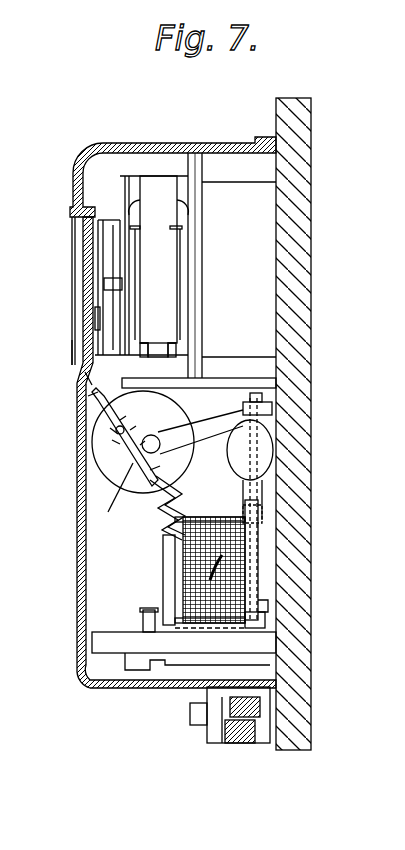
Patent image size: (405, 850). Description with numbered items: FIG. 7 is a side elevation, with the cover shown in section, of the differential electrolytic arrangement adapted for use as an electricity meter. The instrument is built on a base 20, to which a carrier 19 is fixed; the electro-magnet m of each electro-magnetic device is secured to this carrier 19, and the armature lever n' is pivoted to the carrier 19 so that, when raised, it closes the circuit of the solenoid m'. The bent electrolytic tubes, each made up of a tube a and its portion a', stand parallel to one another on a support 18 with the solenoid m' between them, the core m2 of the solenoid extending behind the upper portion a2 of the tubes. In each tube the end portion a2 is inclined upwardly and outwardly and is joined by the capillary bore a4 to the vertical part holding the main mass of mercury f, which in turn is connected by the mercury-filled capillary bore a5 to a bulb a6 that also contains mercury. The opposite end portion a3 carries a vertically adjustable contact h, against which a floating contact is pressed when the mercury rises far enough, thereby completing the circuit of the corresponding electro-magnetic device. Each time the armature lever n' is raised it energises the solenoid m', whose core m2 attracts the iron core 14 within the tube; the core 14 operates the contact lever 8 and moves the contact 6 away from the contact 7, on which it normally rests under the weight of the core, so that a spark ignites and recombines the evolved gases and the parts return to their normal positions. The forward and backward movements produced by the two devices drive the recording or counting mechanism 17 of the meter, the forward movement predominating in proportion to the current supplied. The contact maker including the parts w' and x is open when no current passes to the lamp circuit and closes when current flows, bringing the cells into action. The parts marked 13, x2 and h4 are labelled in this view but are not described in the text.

The base 20 is at (290, 768).
The carrier 19 is at (192, 222).
The electro-magnet m is at (212, 265).
The recording or counting mechanism 17 is at (100, 261).
The armature lever n' is at (181, 340).
The solenoid m' is at (157, 442).
The core m2 is at (161, 443).
The contact lever 8 is at (130, 428).
The contact 6 is at (112, 418).
The stops 13 is at (45, 415).
The end portion of tube a2 is at (100, 428).
The iron core 14 is at (60, 448).
The contact 7 is at (46, 362).
The window x2 is at (60, 365).
The capillary bore a4 is at (150, 512).
The end portion of tube a3 is at (273, 447).
The vertically adjustable contact h is at (280, 490).
The nut h4 is at (280, 513).
The electrolytic tube a is at (182, 572).
The mercury f is at (211, 575).
The electrolytic tube portion a' is at (298, 560).
The bulb a6 is at (268, 602).
The capillary bore a5 is at (265, 622).
The support 18 is at (184, 643).
The contact maker element x is at (143, 630).
The contact maker element w' is at (197, 697).